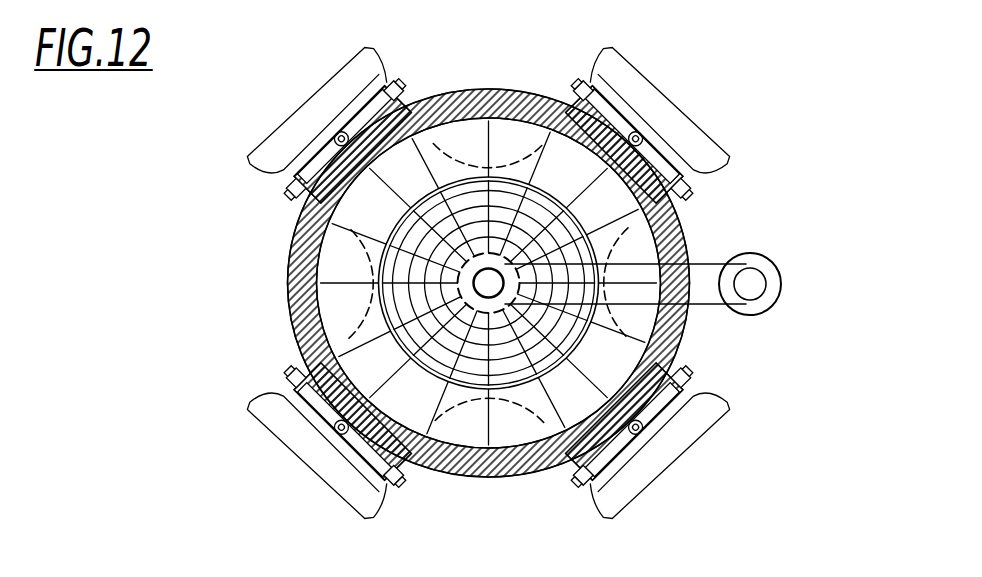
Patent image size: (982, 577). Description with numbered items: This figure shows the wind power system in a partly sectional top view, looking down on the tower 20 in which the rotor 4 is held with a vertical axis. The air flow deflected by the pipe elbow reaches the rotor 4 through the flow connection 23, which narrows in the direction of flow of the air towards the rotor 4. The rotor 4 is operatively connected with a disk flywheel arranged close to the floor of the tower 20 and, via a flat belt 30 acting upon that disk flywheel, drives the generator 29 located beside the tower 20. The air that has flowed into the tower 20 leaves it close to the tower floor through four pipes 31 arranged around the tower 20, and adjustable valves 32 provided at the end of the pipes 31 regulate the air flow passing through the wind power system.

The rotor 4 is at (502, 345).
The tower 20 is at (290, 277).
The flow connection 23 is at (503, 433).
The generator 29 is at (750, 280).
The flat belt 30 is at (698, 298).
The pipes 31 is at (573, 162).
The adjustable valves 32 is at (293, 378).